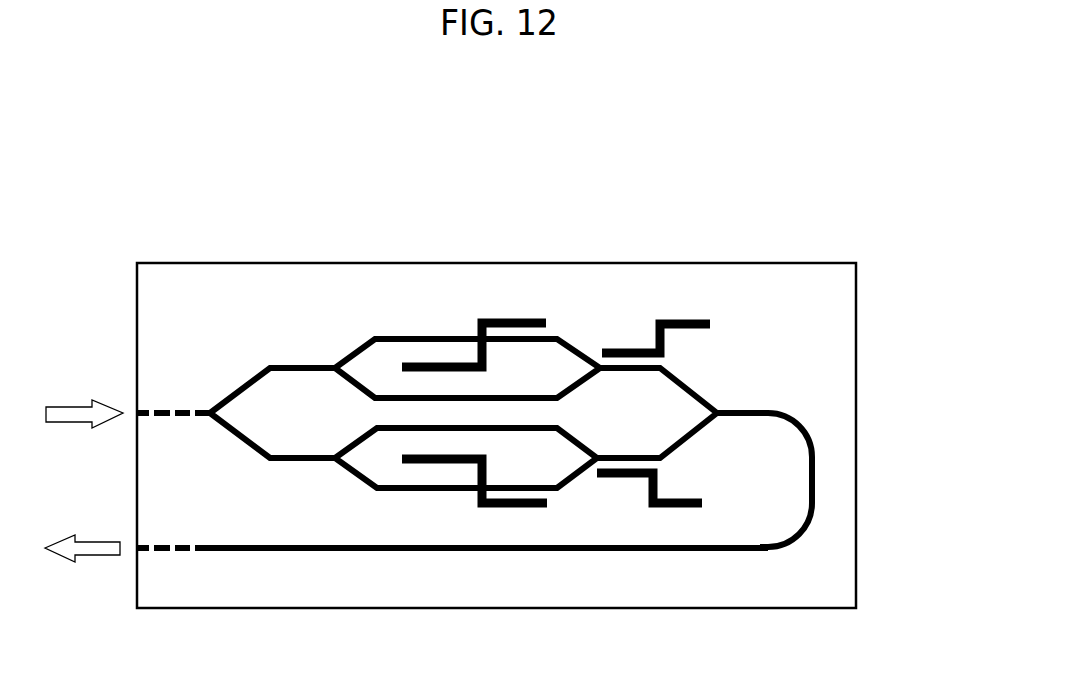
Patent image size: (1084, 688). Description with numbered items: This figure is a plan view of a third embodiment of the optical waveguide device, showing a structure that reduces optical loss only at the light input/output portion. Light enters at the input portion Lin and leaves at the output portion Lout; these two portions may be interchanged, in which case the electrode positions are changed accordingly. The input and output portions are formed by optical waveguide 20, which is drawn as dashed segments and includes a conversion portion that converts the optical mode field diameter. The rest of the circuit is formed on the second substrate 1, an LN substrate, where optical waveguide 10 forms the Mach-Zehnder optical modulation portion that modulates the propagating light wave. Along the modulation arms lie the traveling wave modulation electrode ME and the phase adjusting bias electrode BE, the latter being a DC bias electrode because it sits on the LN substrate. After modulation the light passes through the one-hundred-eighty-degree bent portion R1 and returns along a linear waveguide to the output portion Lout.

The second substrate 1 is at (753, 295).
The optical waveguide A 20 is at (170, 402).
The optical waveguide B 10 is at (424, 330).
The traveling wave modulation electrode ME is at (443, 362).
The phase adjusting bias electrode BE is at (612, 350).
The 180° bent portion R1 is at (816, 457).
The input portion Lin is at (84, 398).
The output portion Lout is at (82, 532).